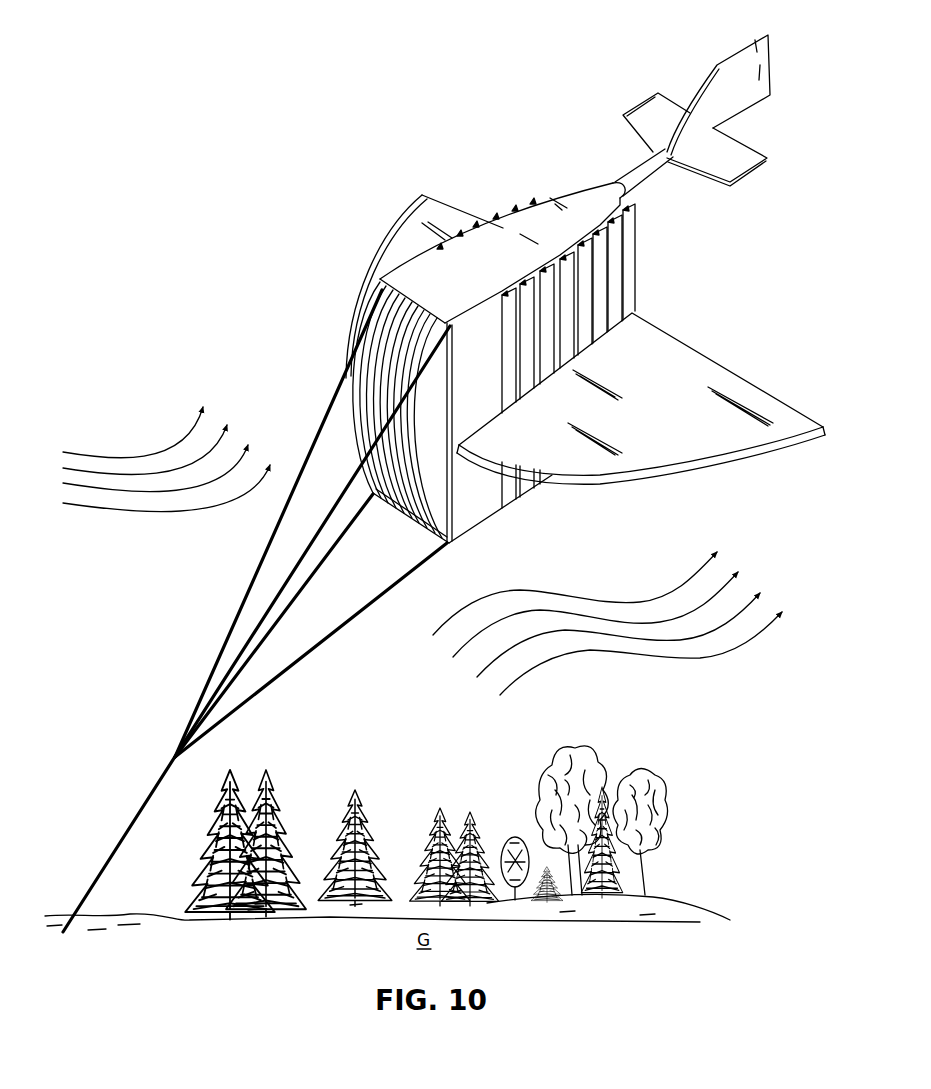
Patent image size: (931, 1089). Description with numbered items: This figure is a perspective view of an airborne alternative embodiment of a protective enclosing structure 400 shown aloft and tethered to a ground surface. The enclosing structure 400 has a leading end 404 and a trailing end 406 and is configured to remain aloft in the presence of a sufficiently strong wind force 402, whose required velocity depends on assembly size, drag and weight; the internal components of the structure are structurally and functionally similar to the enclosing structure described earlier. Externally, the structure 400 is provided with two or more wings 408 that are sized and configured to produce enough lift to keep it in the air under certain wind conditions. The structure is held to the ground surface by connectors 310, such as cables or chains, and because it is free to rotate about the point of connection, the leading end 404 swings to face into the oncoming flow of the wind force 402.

The protective enclosing structure 400 is at (231, 210).
The wind force 402 is at (87, 503).
The leading end 404 is at (373, 417).
The trailing end 406 is at (626, 204).
The wings 408 is at (413, 243).
The connectors 310 is at (120, 837).